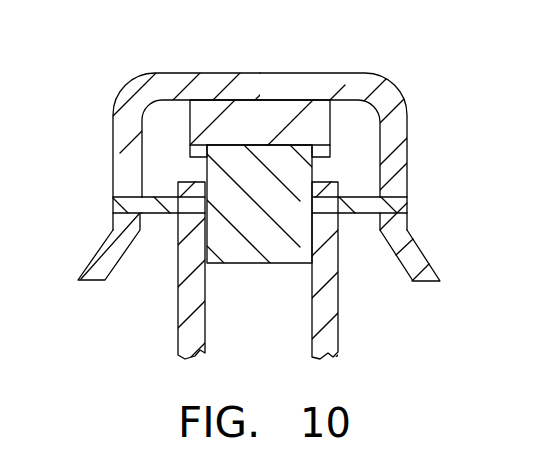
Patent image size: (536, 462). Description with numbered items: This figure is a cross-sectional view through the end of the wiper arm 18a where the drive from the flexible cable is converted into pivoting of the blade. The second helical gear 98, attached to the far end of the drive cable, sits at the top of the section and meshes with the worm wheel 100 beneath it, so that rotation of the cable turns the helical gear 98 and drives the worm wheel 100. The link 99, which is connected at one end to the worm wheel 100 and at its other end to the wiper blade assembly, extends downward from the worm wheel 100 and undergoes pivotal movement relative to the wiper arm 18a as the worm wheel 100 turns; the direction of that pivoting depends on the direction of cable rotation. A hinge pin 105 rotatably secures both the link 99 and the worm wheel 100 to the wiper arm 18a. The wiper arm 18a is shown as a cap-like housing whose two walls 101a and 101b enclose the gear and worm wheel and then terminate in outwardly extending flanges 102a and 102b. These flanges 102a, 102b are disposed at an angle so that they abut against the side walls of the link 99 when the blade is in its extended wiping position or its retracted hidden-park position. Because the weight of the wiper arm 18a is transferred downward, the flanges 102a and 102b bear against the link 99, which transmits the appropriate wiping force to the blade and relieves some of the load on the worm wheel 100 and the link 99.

The wiper arm 18a is at (328, 44).
The second helical gear 98 is at (227, 127).
The link 99 is at (339, 323).
The worm wheel 100 is at (272, 237).
The wall 101a is at (398, 150).
The wall 101b is at (118, 117).
The outwardly extending flange 102a is at (414, 263).
The outwardly extending flange 102b is at (92, 258).
The hinge pin 105 is at (112, 206).